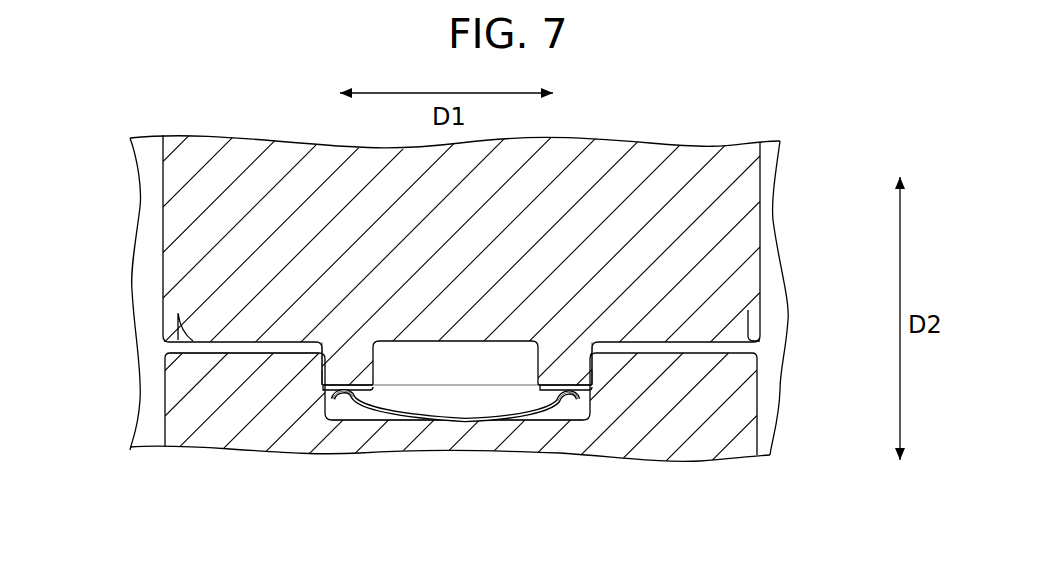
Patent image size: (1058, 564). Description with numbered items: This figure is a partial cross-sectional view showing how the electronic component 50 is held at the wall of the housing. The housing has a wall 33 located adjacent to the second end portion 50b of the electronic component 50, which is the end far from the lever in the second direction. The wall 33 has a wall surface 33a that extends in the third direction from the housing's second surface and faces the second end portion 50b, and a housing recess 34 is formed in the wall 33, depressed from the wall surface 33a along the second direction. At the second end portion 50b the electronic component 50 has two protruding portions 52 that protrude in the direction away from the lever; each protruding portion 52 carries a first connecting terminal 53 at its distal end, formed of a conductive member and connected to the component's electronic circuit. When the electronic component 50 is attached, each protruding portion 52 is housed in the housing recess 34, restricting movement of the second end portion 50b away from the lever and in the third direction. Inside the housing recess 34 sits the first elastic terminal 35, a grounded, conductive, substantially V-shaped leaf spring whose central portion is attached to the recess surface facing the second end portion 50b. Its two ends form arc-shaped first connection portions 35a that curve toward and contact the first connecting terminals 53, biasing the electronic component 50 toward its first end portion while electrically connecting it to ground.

The electronic component 50 is at (715, 220).
The second end portion 50b is at (705, 322).
The protruding portions 52 is at (347, 372).
The first connecting terminal 53 is at (327, 387).
The wall 33 is at (258, 415).
The wall surface 33a is at (276, 348).
The housing recess 34 is at (360, 415).
The first elastic terminal 35 is at (530, 412).
The first connection portions 35a is at (345, 394).